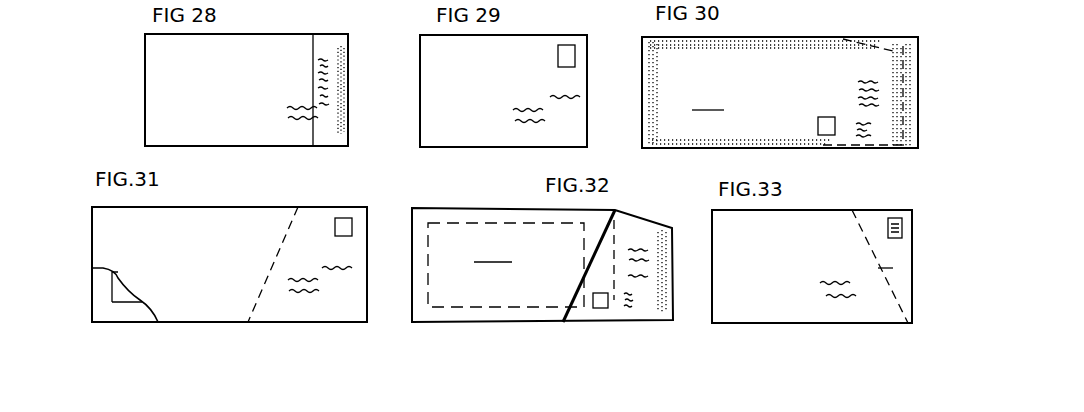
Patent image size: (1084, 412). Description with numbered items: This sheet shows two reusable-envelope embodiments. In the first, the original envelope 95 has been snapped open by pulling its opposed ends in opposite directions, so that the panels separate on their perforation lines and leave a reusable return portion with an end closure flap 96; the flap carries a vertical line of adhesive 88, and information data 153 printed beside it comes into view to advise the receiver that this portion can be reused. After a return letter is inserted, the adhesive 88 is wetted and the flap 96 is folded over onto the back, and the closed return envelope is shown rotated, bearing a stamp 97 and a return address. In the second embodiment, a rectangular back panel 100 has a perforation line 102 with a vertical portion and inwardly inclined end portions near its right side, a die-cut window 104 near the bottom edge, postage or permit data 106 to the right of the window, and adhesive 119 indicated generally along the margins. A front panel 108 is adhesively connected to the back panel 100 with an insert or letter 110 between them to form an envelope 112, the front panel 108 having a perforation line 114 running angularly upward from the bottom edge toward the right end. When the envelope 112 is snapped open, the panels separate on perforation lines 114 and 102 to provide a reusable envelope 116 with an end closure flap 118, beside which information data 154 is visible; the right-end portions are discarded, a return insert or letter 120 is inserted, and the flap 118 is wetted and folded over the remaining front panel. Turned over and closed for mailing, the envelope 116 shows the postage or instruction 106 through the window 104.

In FIG. 28, the envelope 95 is at (145, 100).
In FIG. 29, the envelope 95 is at (420, 124).
In FIG. 28, the end closure flap 96 is at (325, 44).
In FIG. 28, the vertical line of adhesive 88 is at (340, 84).
In FIG. 28, the information data 153 is at (317, 64).
In FIG. 29, the stamp 97 is at (574, 54).
In FIG. 30, the back panel 100 is at (780, 92).
In FIG. 30, the adhesive 119 is at (655, 70).
In FIG. 30, the perforation line 102 is at (870, 48).
In FIG. 30, the information data 154 is at (856, 97).
In FIG. 32, the information data 154 is at (641, 282).
In FIG. 30, the window 104 is at (818, 127).
In FIG. 32, the window 104 is at (600, 309).
In FIG. 33, the window 104 is at (888, 228).
In FIG. 30, the postage or instruction data 106 is at (870, 128).
In FIG. 32, the postage or instruction data 106 is at (626, 307).
In FIG. 33, the postage or instruction data 106 is at (902, 226).
In FIG. 31, the front panel 108 is at (215, 317).
In FIG. 31, the insert or letter 110 is at (127, 297).
In FIG. 31, the perforation line 114 is at (268, 274).
In FIG. 31, the envelope 112 is at (317, 204).
In FIG. 32, the envelope 116 is at (542, 265).
In FIG. 33, the envelope 116 is at (794, 328).
In FIG. 32, the return insert or letter 120 is at (460, 222).
In FIG. 32, the end closure flap 118 is at (648, 240).